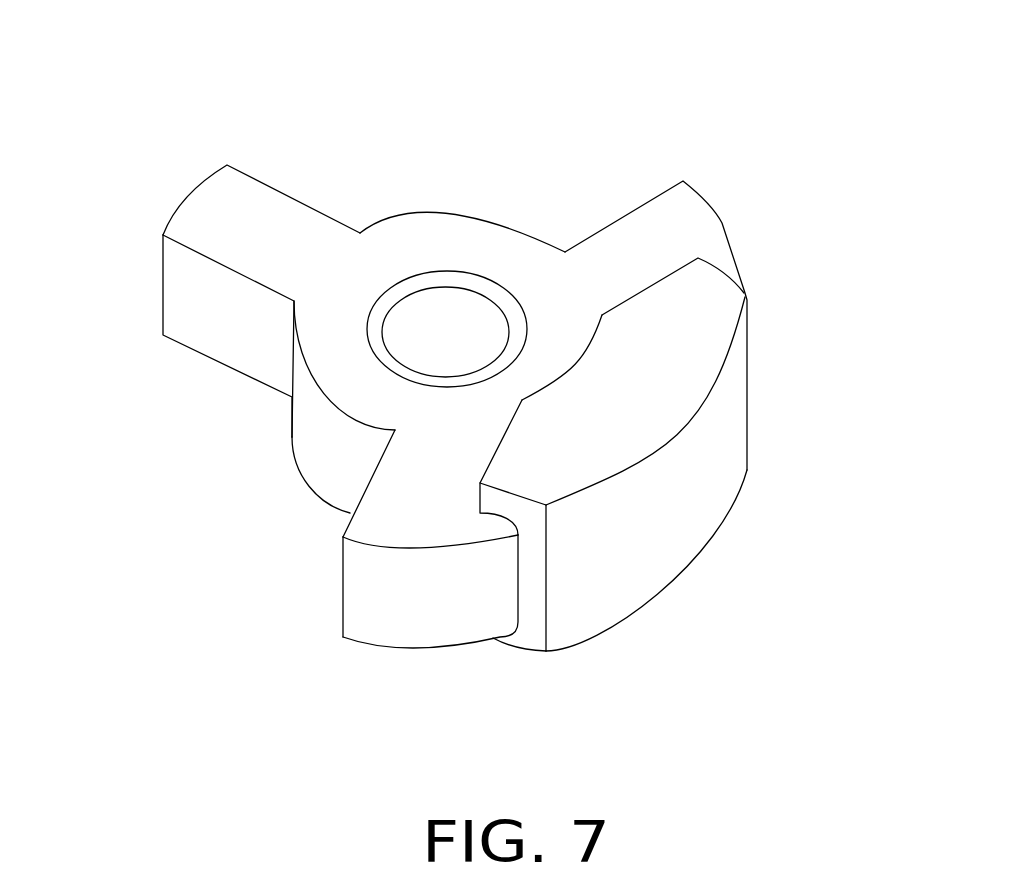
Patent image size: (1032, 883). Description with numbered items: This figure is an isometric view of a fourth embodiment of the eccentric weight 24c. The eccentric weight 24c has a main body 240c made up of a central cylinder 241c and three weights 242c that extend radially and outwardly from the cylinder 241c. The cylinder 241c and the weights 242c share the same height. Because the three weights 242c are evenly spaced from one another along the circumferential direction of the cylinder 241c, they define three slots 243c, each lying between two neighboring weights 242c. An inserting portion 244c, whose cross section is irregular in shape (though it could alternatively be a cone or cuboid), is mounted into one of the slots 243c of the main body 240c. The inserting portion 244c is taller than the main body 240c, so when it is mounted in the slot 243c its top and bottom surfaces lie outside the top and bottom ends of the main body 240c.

The eccentric weight 24c is at (474, 371).
The main body 240c is at (574, 371).
The cylinder 241c is at (450, 253).
The weight 242c is at (599, 404).
The slot 243c is at (267, 402).
The inserting portion 244c is at (642, 542).